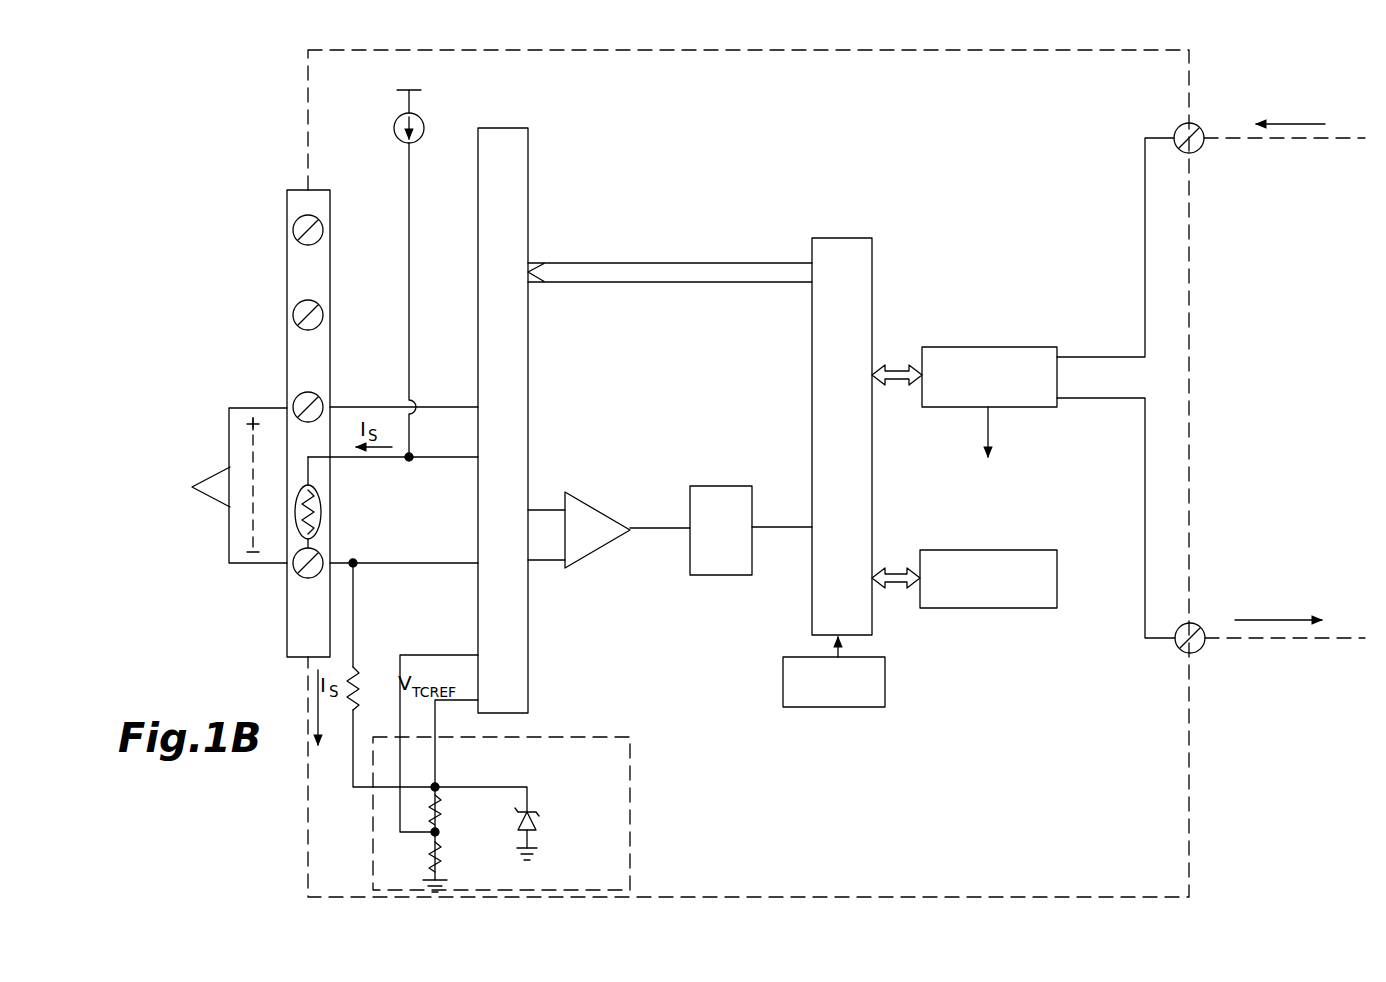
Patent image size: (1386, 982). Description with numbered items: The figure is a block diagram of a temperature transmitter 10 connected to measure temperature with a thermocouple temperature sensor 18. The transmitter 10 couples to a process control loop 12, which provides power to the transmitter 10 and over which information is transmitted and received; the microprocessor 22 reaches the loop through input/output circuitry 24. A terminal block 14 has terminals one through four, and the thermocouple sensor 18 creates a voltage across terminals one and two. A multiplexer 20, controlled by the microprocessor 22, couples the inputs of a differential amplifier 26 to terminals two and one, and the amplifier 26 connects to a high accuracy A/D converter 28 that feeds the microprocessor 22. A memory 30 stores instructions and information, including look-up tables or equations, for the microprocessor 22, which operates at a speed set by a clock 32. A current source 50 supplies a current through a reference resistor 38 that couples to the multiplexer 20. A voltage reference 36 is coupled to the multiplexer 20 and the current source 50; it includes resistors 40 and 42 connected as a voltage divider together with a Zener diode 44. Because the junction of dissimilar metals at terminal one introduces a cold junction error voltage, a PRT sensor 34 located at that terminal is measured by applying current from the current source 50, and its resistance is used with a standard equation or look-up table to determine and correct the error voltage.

The temperature transmitter 10 is at (844, 471).
The process control loop 12 is at (1269, 398).
The terminal block 14 is at (273, 413).
The thermocouple temperature sensor 18 is at (221, 485).
The multiplexer 20 is at (549, 400).
The microprocessor 22 is at (741, 432).
The input/output circuitry 24 is at (964, 394).
The differential amplifier 26 is at (609, 509).
The A/D converter 28 is at (746, 505).
The memory 30 is at (964, 555).
The clock 32 is at (877, 672).
The PRT sensor 34 is at (349, 502).
The voltage reference 36 is at (565, 814).
The reference resistor 38 is at (391, 675).
The resistor 40 is at (462, 814).
The resistor 42 is at (461, 867).
The Zener diode 44 is at (512, 820).
The current source 50 is at (437, 259).